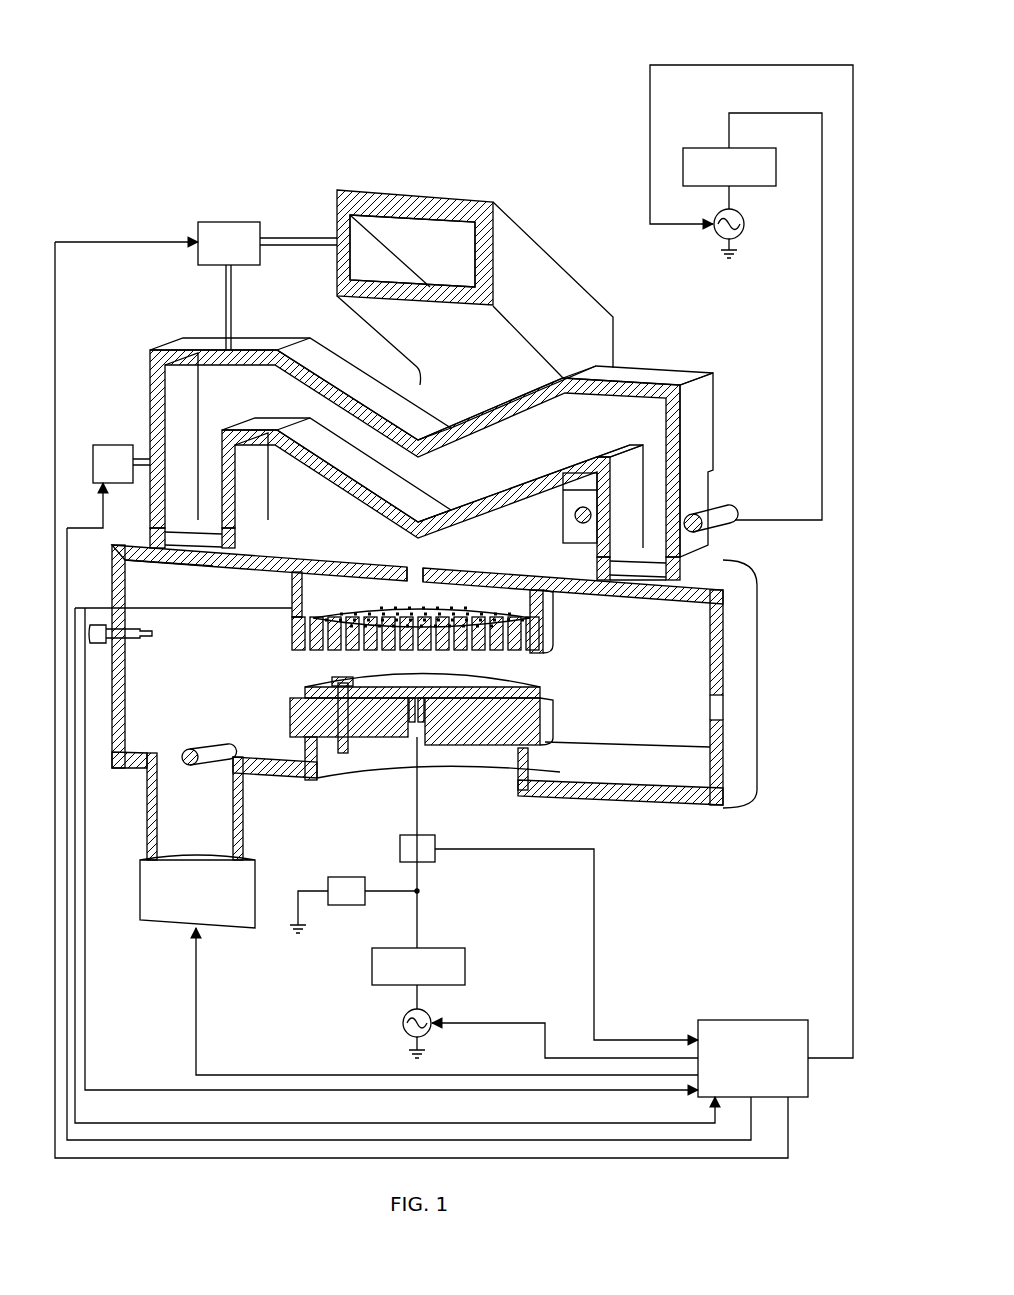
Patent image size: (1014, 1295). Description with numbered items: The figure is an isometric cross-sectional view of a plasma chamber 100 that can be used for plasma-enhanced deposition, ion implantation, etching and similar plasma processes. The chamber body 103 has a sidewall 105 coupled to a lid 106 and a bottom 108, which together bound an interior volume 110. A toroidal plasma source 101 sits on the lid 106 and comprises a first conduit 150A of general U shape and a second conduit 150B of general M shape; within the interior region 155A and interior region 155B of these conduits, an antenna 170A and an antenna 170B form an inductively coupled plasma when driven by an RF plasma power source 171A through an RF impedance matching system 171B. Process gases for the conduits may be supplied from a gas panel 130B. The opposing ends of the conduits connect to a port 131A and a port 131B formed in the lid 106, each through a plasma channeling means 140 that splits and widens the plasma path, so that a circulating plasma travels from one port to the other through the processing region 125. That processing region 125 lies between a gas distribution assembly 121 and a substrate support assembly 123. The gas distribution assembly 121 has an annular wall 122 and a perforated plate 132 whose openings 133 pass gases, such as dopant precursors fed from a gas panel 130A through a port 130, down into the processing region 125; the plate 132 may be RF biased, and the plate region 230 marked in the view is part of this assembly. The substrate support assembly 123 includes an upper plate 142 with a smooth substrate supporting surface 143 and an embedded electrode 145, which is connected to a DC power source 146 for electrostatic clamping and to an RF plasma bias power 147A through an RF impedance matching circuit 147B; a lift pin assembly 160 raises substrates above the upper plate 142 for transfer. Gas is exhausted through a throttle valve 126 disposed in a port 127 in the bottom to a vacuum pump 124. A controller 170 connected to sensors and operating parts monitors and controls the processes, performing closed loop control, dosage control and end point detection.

The plasma chamber 100 is at (590, 62).
The toroidal plasma source 101 is at (640, 347).
The chamber body 103 is at (770, 600).
The sidewall 105 is at (740, 652).
The lid 106 is at (142, 540).
The bottom 108 is at (650, 805).
The interior volume 110 is at (688, 652).
The gas distribution assembly 121 is at (548, 648).
The annular wall 122 is at (290, 590).
The substrate support assembly 123 is at (542, 790).
The vacuum pump 124 is at (220, 920).
The processing region 125 is at (551, 735).
The valve 126 is at (155, 800).
The port 127 is at (212, 765).
The port 130 is at (425, 570).
The gas panel 130A is at (108, 461).
The gas panel 130B is at (230, 222).
The port 131A is at (213, 565).
The port 131B is at (645, 585).
The perforated plate 132 is at (292, 622).
The openings 133 is at (548, 662).
The plasma channeling means 140 is at (290, 522).
The upper plate 142 is at (305, 700).
The substrate supporting surface 143 is at (400, 670).
The embedded electrode 145 is at (310, 676).
The DC power source 146 is at (348, 905).
The RF plasma bias power 147A is at (432, 1030).
The RF impedance matching circuit 147B is at (465, 960).
The first conduit 150A is at (385, 192).
The second conduit 150B is at (700, 410).
The interior region 155A is at (437, 240).
The interior region 155B is at (185, 410).
The lift pin assembly 160 is at (350, 757).
The controller 170 is at (718, 1020).
The antenna 170A is at (551, 508).
The antenna 170B is at (735, 512).
The RF plasma power source 171A is at (746, 224).
The RF impedance matching system 171B is at (700, 146).
The showerhead plate 230 is at (355, 601).